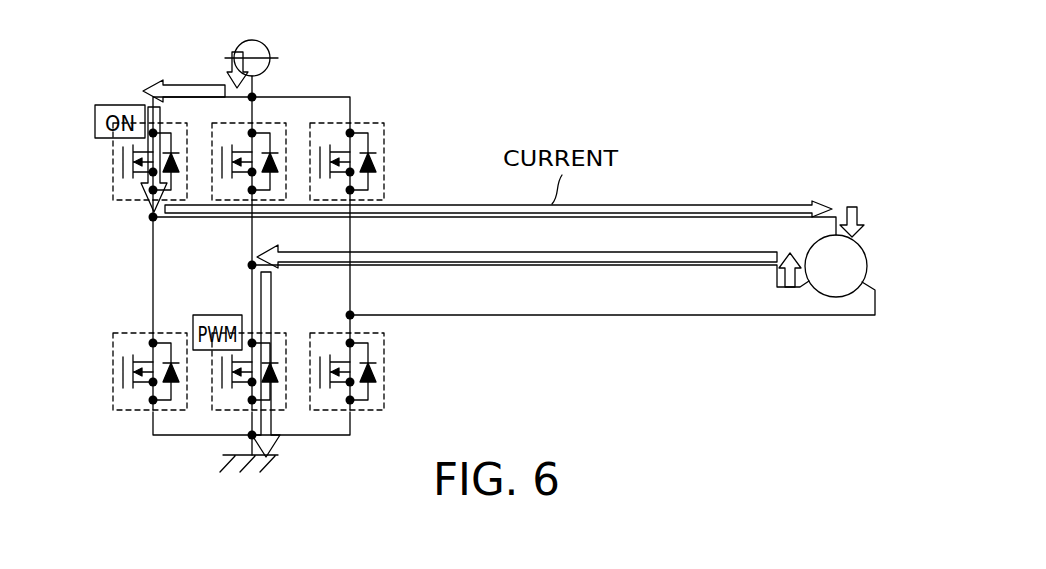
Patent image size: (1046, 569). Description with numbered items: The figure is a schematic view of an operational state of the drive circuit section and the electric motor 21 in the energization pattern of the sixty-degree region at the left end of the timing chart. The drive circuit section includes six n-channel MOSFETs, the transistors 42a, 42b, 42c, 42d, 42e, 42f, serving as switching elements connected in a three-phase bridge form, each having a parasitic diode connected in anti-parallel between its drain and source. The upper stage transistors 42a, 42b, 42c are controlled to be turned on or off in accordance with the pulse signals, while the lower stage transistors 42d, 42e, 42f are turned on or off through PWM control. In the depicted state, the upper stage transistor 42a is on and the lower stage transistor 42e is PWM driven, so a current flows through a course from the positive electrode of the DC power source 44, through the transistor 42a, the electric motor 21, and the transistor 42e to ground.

The DC power source 44 is at (270, 50).
The transistor 42a is at (113, 175).
The transistor 42b is at (282, 121).
The transistor 42c is at (384, 123).
The transistor 42d is at (113, 333).
The transistor 42e is at (275, 333).
The transistor 42f is at (384, 370).
The electric motor 21 is at (868, 262).